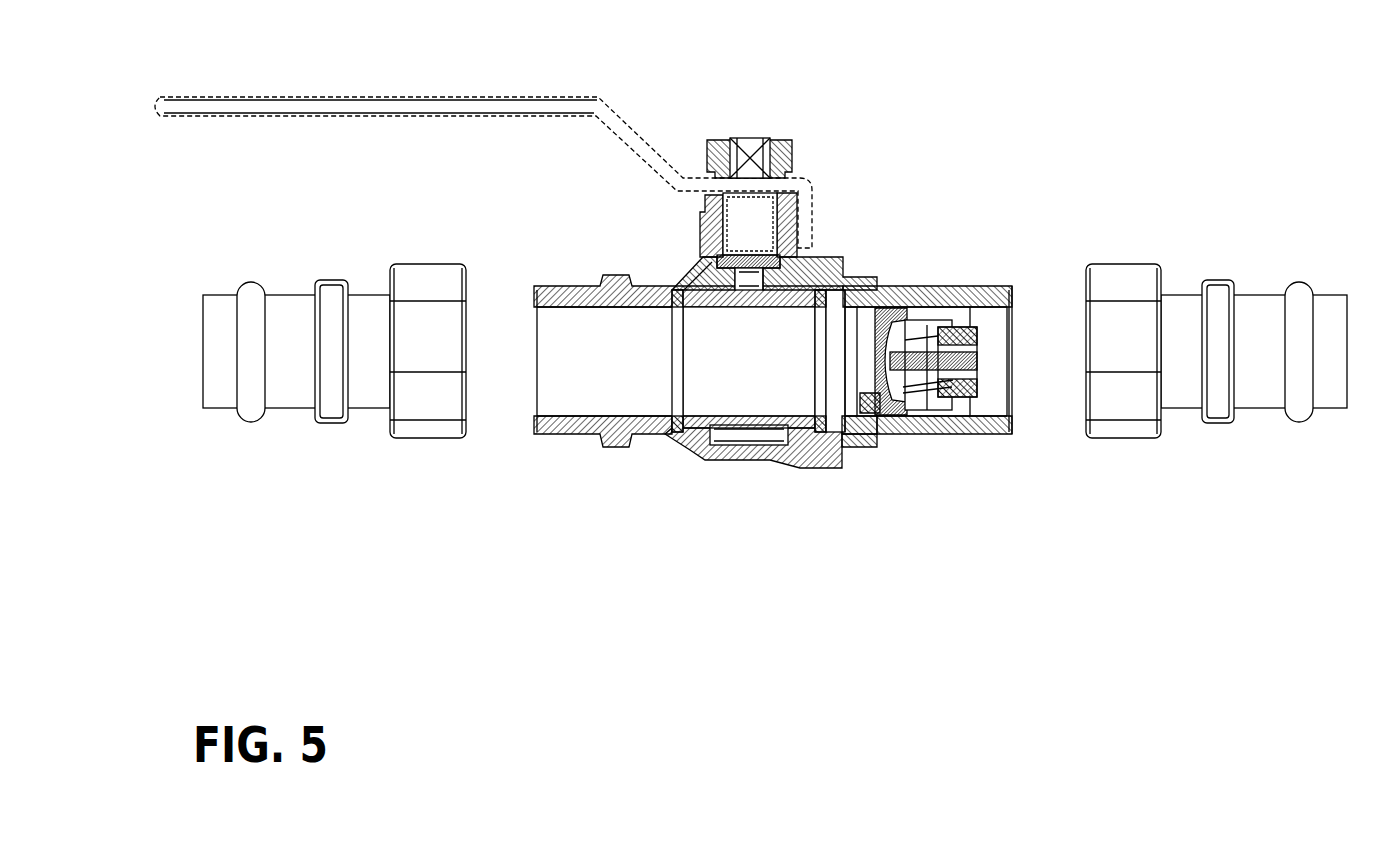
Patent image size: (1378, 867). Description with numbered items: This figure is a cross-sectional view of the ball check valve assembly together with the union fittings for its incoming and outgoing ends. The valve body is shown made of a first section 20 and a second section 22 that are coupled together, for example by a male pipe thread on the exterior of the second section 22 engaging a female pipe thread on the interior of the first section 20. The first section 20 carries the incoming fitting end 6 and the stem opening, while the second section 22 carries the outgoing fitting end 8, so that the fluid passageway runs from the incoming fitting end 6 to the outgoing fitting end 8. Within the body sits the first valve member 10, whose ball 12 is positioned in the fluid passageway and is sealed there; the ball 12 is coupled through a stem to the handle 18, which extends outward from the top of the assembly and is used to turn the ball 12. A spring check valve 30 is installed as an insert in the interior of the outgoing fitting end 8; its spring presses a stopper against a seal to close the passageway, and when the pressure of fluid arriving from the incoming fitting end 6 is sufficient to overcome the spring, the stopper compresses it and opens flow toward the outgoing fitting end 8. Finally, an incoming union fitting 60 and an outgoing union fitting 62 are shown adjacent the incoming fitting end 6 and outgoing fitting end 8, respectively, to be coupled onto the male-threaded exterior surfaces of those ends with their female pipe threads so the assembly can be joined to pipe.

The incoming fitting end 6 is at (575, 437).
The outgoing fitting end 8 is at (990, 435).
The first valve member 10 is at (748, 220).
The ball 12 is at (772, 300).
The handle 18 is at (492, 103).
The first section 20 is at (655, 432).
The second section 22 is at (857, 440).
The spring check valve 30 is at (925, 340).
The incoming union fitting 60 is at (432, 430).
The outgoing union fitting 62 is at (1124, 430).